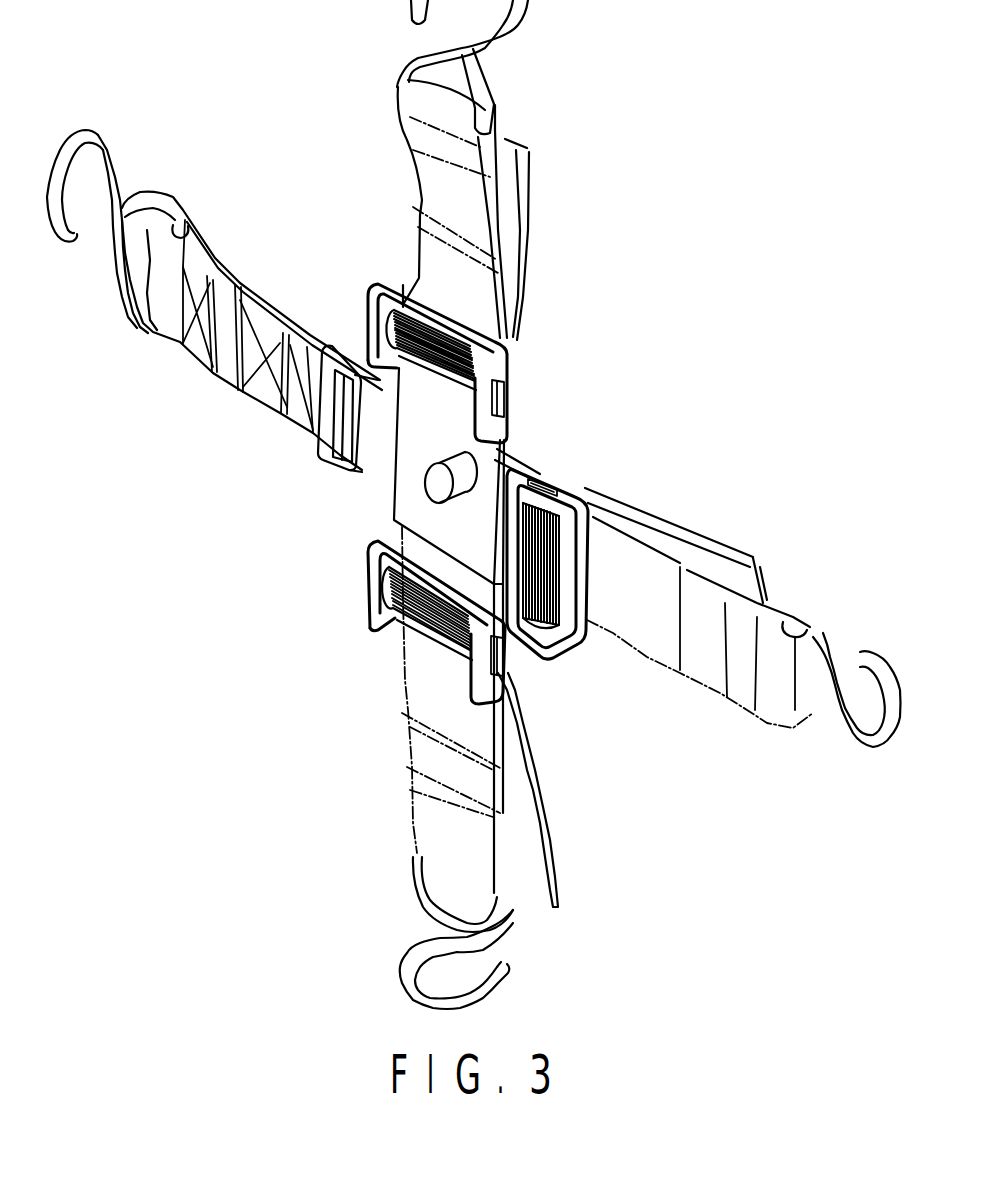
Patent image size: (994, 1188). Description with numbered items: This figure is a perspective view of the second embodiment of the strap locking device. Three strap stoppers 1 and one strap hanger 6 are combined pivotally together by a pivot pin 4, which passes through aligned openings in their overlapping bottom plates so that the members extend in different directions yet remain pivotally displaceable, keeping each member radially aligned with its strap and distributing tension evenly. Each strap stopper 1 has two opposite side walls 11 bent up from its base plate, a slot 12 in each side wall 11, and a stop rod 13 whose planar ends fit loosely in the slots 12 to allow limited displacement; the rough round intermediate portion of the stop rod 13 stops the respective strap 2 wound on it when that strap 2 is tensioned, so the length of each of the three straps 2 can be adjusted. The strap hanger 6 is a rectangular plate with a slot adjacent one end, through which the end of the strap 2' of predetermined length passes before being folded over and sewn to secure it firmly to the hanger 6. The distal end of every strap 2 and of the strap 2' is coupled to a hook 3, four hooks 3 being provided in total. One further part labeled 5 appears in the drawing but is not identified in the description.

The strap stopper 1 is at (407, 473).
The strap 2 is at (605, 490).
The strap of predetermined length 2' is at (252, 338).
The hook 3 is at (104, 157).
The pivot pin 4 is at (437, 490).
The slot 5 is at (352, 350).
The strap hanger 6 is at (300, 503).
The side wall 11 is at (500, 374).
The slot 12 is at (500, 413).
The stop rod 13 is at (455, 358).